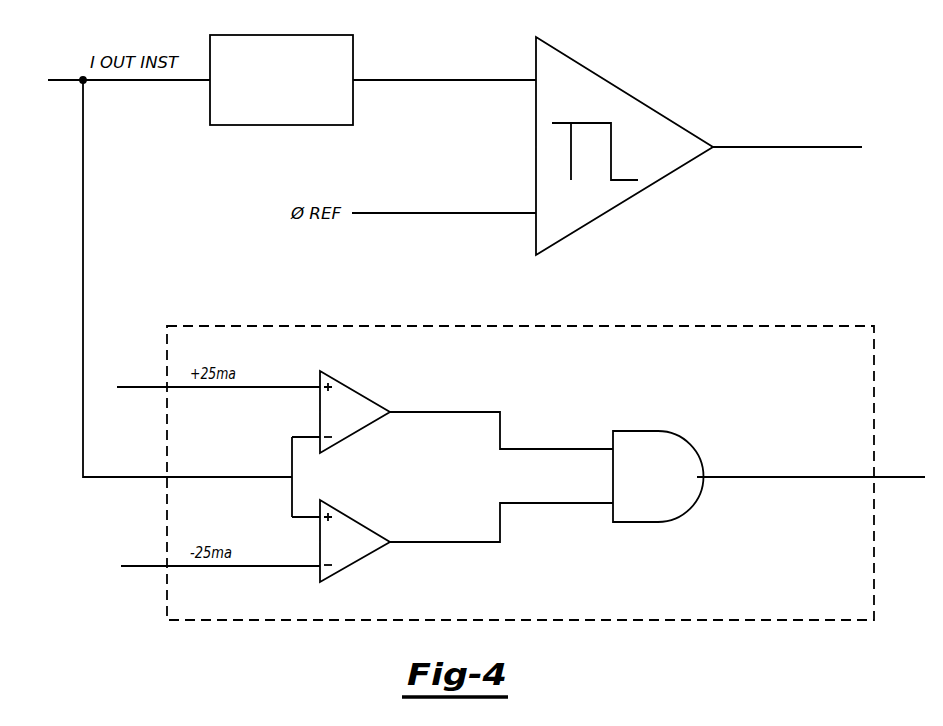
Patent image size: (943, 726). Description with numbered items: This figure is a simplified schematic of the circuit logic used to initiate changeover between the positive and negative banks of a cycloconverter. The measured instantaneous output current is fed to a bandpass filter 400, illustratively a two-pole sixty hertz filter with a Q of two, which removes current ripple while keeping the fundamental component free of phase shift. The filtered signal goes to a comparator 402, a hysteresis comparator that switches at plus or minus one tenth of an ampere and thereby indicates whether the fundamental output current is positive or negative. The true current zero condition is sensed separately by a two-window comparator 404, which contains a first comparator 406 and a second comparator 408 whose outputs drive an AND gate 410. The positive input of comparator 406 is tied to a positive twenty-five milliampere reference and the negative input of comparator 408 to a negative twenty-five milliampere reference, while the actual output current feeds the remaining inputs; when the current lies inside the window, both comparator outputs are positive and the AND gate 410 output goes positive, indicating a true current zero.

The bandpass filter 400 is at (353, 55).
The comparator 402 is at (652, 107).
The comparator 404 is at (753, 326).
The first comparator 406 is at (363, 392).
The second comparator 408 is at (363, 523).
The AND gate 410 is at (687, 447).